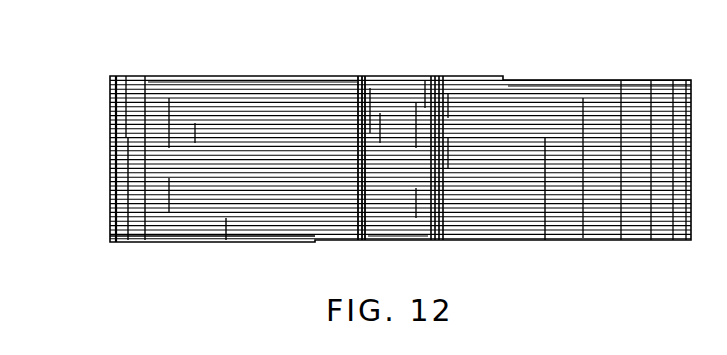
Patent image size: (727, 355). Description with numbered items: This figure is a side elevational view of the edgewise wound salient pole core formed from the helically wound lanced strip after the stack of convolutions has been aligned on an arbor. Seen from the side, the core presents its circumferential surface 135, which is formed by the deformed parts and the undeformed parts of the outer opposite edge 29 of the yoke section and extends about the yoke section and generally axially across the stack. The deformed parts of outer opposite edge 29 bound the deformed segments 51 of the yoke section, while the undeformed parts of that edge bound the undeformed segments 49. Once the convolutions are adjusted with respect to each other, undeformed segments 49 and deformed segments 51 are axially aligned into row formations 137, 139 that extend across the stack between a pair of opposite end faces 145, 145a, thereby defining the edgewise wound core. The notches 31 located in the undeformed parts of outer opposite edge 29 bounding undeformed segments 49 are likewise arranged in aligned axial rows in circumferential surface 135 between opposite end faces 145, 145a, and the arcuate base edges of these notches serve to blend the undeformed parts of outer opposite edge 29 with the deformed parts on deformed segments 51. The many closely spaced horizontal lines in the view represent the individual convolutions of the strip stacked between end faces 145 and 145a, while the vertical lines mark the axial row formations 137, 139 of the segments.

The opposite end face 145a is at (138, 68).
The outer opposite edge 29 is at (103, 107).
The circumferential surface 135 is at (103, 178).
The opposite end face 145 is at (126, 234).
The deformed segments 51 is at (243, 76).
The notches 31 is at (382, 76).
The undeformed segments 49 is at (405, 72).
The axial row formation 139 is at (220, 233).
The axial row formation 137 is at (393, 232).